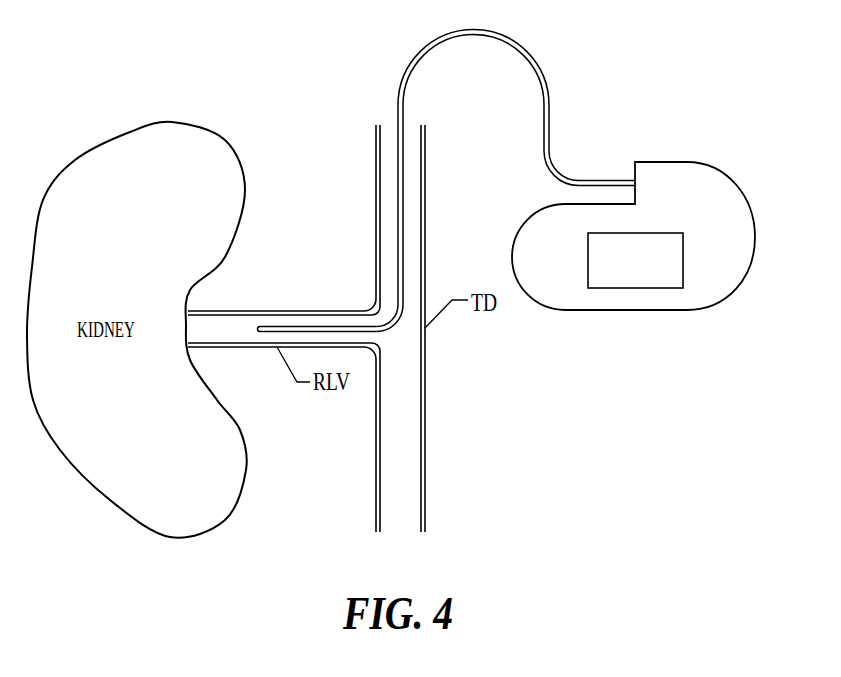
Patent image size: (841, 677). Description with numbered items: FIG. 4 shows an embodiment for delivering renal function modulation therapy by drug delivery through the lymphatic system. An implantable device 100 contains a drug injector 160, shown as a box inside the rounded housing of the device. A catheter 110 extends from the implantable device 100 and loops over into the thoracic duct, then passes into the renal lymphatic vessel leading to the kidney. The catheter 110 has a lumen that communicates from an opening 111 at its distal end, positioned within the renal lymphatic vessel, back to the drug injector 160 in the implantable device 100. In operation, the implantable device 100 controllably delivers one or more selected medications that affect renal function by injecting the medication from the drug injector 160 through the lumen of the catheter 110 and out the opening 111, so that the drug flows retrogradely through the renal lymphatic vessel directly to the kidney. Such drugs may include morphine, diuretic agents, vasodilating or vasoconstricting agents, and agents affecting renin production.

The implantable device 100 is at (680, 161).
The catheter 110 is at (472, 30).
The opening 111 is at (258, 329).
The drug injector 160 is at (637, 232).